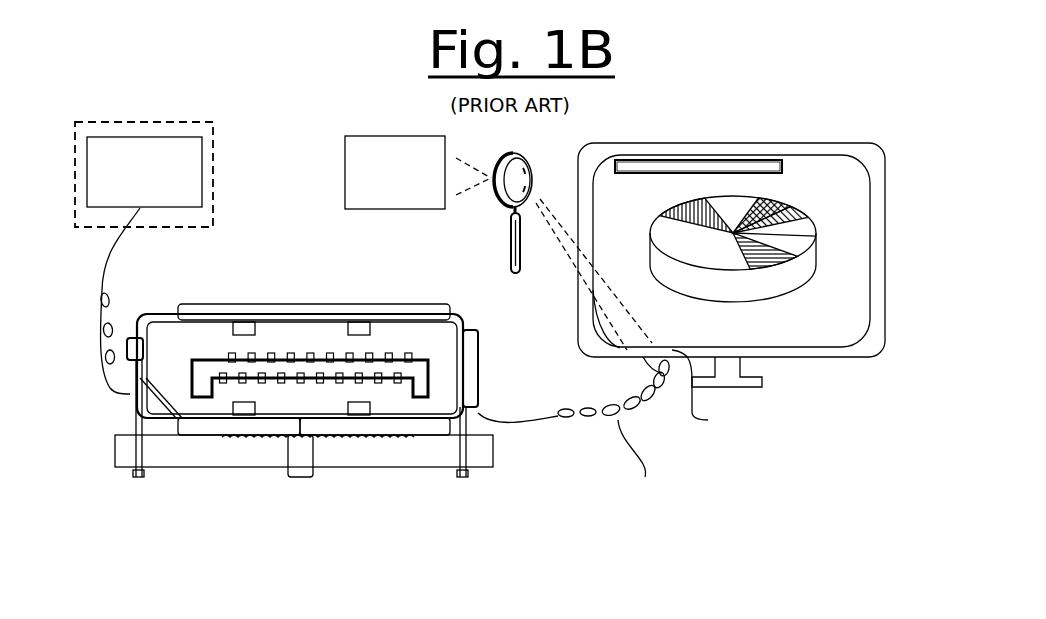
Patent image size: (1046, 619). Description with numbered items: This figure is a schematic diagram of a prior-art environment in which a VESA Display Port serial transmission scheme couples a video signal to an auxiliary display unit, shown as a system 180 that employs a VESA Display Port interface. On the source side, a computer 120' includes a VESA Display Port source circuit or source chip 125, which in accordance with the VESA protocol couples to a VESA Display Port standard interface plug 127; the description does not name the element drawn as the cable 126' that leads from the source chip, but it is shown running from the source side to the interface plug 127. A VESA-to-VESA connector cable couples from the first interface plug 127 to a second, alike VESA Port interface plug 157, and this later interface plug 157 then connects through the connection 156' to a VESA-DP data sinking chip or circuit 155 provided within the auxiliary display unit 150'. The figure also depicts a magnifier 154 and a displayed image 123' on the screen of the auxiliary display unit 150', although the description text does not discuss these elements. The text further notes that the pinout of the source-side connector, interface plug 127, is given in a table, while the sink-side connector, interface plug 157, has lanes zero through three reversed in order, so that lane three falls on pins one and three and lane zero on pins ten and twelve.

The system 180 is at (770, 72).
The computer 120' is at (185, 147).
The VESA Display Port source circuit or source chip 125 is at (146, 136).
The cable from source to connector 126' is at (128, 301).
The VESA Display Port standard interface plug 127 is at (304, 380).
The VESA Port interface plug 157 is at (260, 303).
The VESA-DP data sinking chip or circuit 155 is at (383, 142).
The magnifier / link inspection 154 is at (514, 205).
The auxiliary display unit 150' is at (731, 251).
The displayed pie chart image 123' is at (711, 249).
The connection 156' is at (597, 439).